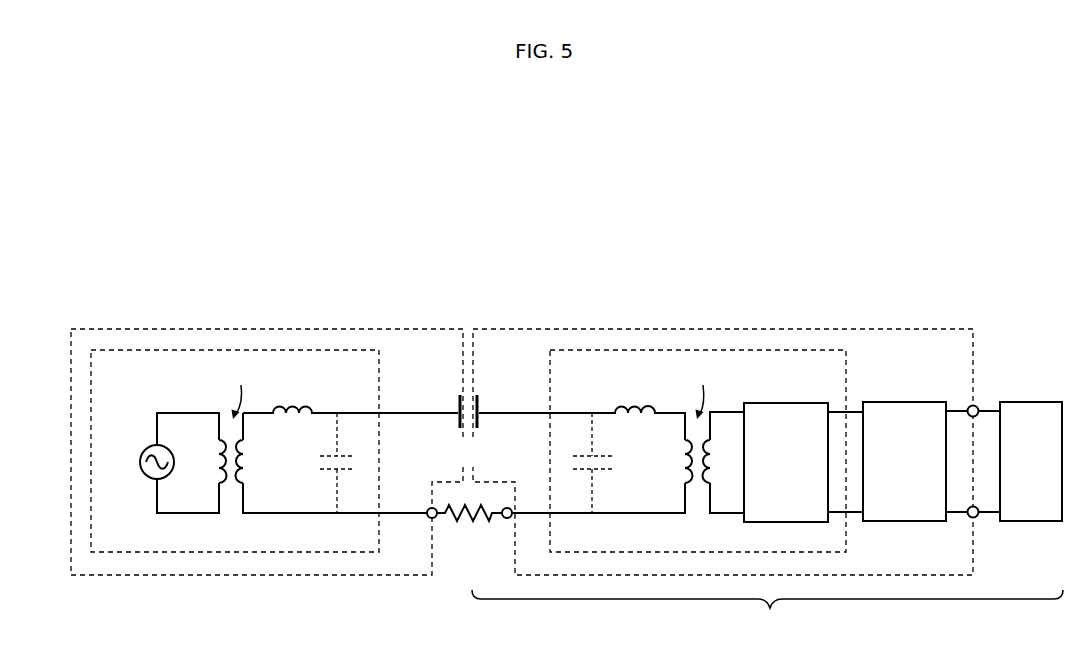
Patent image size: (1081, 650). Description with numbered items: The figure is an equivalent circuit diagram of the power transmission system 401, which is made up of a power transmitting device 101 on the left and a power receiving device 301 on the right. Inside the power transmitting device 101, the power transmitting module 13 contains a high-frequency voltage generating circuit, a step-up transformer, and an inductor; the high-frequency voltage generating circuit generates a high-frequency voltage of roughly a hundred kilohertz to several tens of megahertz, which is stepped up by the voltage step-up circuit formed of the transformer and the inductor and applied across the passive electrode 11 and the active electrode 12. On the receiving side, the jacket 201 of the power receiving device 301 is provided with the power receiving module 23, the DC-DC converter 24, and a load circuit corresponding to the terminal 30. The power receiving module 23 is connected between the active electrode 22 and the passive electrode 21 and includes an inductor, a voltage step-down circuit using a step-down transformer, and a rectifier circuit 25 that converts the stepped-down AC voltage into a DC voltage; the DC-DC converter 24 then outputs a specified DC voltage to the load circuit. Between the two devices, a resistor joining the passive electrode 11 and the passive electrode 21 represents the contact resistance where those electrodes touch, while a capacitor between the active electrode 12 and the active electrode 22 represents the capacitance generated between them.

The power transmission system 401 is at (896, 200).
The power transmitting device 101 is at (198, 326).
The power transmitting module 13 is at (296, 347).
The active electrode 12 is at (457, 402).
The active electrode 22 is at (480, 402).
The passive electrode 11 is at (428, 519).
The passive electrode 21 is at (512, 519).
The jacket 201 is at (758, 327).
The power receiving module 23 is at (645, 347).
The rectifier circuit 25 is at (786, 403).
The DC-DC converter 24 is at (906, 402).
The terminal 30 is at (1031, 402).
The power receiving device 301 is at (767, 614).